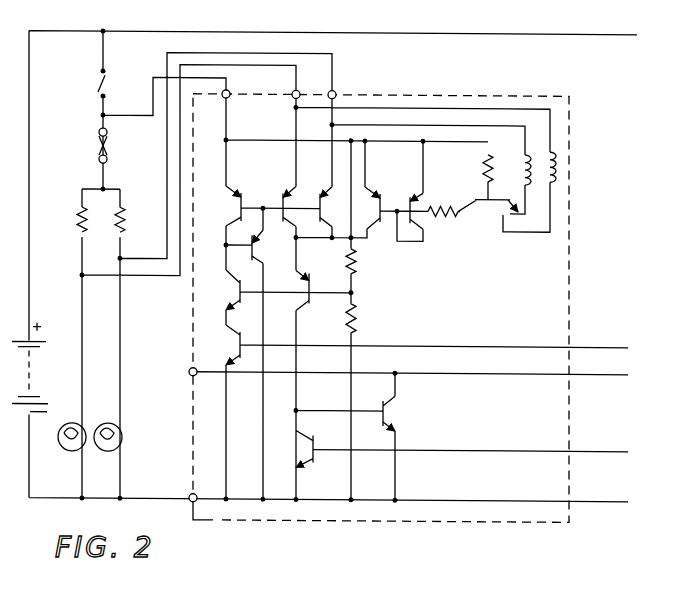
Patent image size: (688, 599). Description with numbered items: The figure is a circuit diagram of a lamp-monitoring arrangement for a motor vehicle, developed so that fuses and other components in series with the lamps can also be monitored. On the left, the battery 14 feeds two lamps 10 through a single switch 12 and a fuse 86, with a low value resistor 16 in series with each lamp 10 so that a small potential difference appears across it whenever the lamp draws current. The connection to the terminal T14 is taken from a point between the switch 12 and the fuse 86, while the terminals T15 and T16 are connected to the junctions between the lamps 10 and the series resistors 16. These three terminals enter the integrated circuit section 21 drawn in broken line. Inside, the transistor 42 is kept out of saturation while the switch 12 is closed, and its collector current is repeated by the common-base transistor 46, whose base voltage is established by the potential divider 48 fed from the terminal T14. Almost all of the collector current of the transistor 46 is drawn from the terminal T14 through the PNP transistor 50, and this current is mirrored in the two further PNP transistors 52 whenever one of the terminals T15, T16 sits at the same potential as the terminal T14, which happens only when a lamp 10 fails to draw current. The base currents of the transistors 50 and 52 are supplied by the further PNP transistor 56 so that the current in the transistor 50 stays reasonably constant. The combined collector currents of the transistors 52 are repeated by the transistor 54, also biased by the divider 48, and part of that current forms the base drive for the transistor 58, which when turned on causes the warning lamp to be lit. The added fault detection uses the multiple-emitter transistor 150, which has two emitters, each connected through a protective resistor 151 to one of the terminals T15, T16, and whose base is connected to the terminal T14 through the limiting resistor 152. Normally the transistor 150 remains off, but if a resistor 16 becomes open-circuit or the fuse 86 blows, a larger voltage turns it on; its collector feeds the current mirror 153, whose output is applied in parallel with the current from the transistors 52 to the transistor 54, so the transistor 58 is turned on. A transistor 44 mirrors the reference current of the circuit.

The lamps 10 is at (78, 447).
The switch 12 is at (97, 83).
The battery 14 is at (33, 366).
The low value resistor 16 is at (114, 223).
The control circuit block 21 is at (213, 522).
The transistor 42 is at (238, 346).
The transistors 44 is at (308, 463).
The transistor 46 is at (238, 292).
The potential divider 48 is at (356, 291).
The PNP transistor 50 is at (238, 196).
The PNP transistors 52 is at (316, 190).
The transistor 54 is at (312, 300).
The PNP transistor 56 is at (254, 250).
The transistor 58 is at (394, 408).
The fuse 86 is at (99, 149).
The multiple-emitter transistor 150 is at (480, 205).
The protective resistor 151 is at (556, 176).
The limiting resistor 152 is at (484, 169).
The current mirror 153 is at (414, 246).
The terminal T14 is at (230, 91).
The terminal T15 is at (292, 97).
The terminal T16 is at (336, 91).